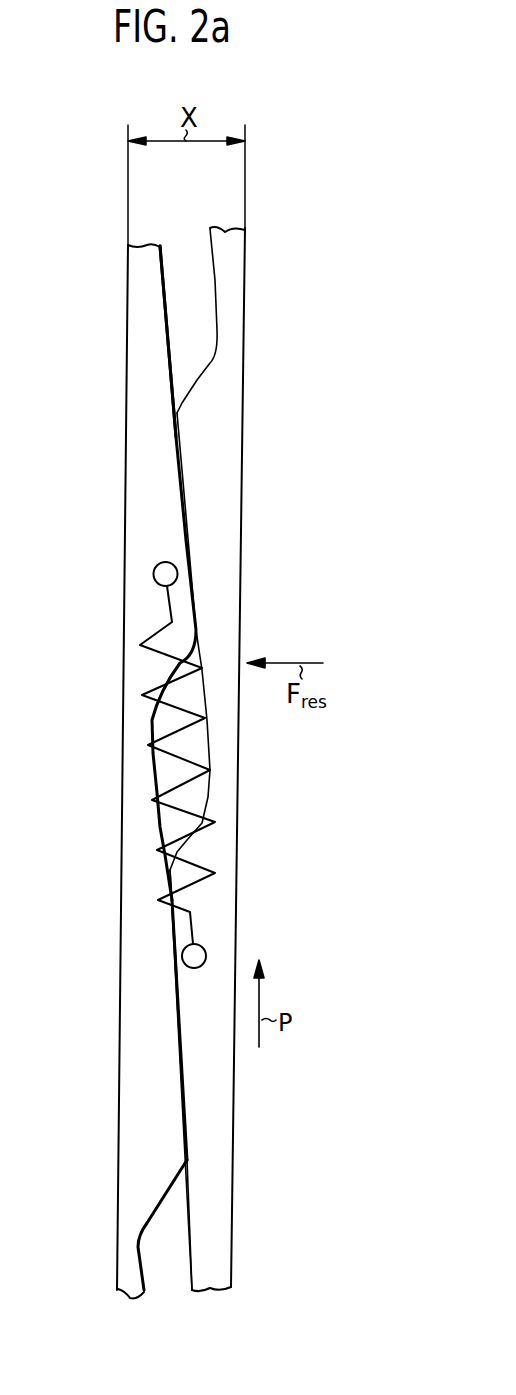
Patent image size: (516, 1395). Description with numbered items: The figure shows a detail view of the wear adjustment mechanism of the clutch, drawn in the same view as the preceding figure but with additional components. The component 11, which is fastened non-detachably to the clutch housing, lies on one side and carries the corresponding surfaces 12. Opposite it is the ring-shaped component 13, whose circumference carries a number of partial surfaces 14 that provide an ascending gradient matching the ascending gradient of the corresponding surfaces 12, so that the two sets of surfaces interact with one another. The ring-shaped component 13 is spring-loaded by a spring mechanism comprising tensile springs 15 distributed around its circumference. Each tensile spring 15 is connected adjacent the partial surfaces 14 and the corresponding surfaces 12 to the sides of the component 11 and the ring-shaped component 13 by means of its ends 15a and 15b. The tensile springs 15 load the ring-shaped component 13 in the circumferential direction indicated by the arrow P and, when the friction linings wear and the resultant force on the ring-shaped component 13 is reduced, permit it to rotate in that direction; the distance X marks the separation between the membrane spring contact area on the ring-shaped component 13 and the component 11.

The component 11 is at (137, 532).
The corresponding surfaces 12 is at (178, 436).
The ring-shaped component 13 is at (250, 543).
The partial surfaces 14 is at (176, 452).
The tensile springs 15 is at (170, 757).
The end 15a is at (153, 574).
The end 15b is at (182, 955).